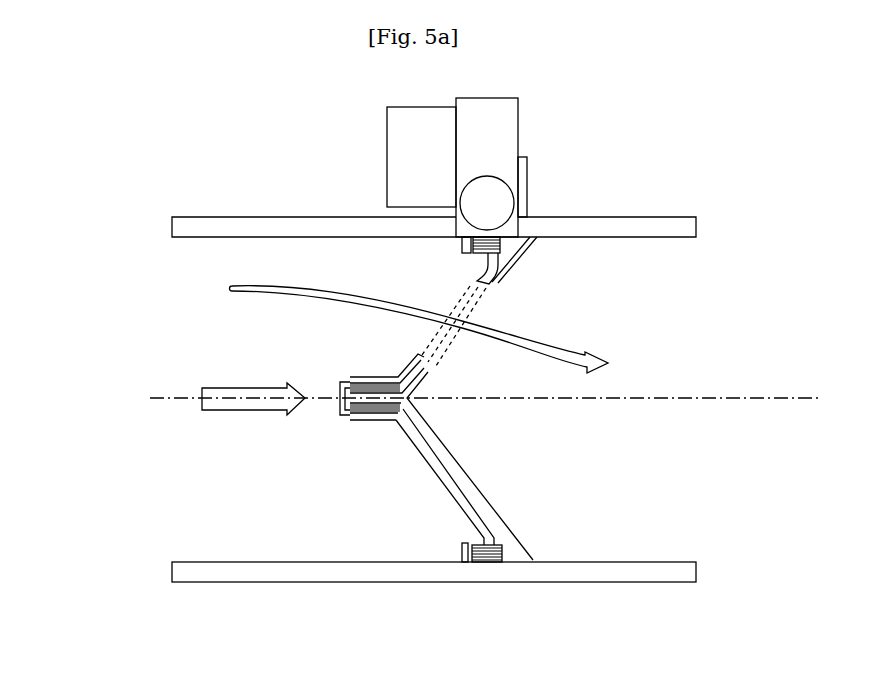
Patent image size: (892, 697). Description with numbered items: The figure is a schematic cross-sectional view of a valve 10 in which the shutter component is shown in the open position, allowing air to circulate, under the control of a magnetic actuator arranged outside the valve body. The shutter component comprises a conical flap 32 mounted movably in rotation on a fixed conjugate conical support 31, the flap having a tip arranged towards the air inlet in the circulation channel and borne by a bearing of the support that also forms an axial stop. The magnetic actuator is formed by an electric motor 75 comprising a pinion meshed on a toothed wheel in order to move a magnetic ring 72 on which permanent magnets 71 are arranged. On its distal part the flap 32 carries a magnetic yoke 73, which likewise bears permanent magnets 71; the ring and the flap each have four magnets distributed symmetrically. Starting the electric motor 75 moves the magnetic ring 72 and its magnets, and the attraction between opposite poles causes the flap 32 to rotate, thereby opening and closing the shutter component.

The wafer cleaning apparatus 10 is at (161, 181).
The electric motor 75 is at (412, 172).
The magnetic ring 72 is at (502, 132).
The permanent magnets 71 is at (503, 253).
The magnetic yoke 73 is at (505, 255).
The fixed conjugate conical support 31 is at (460, 462).
The conical flap 32 is at (425, 458).